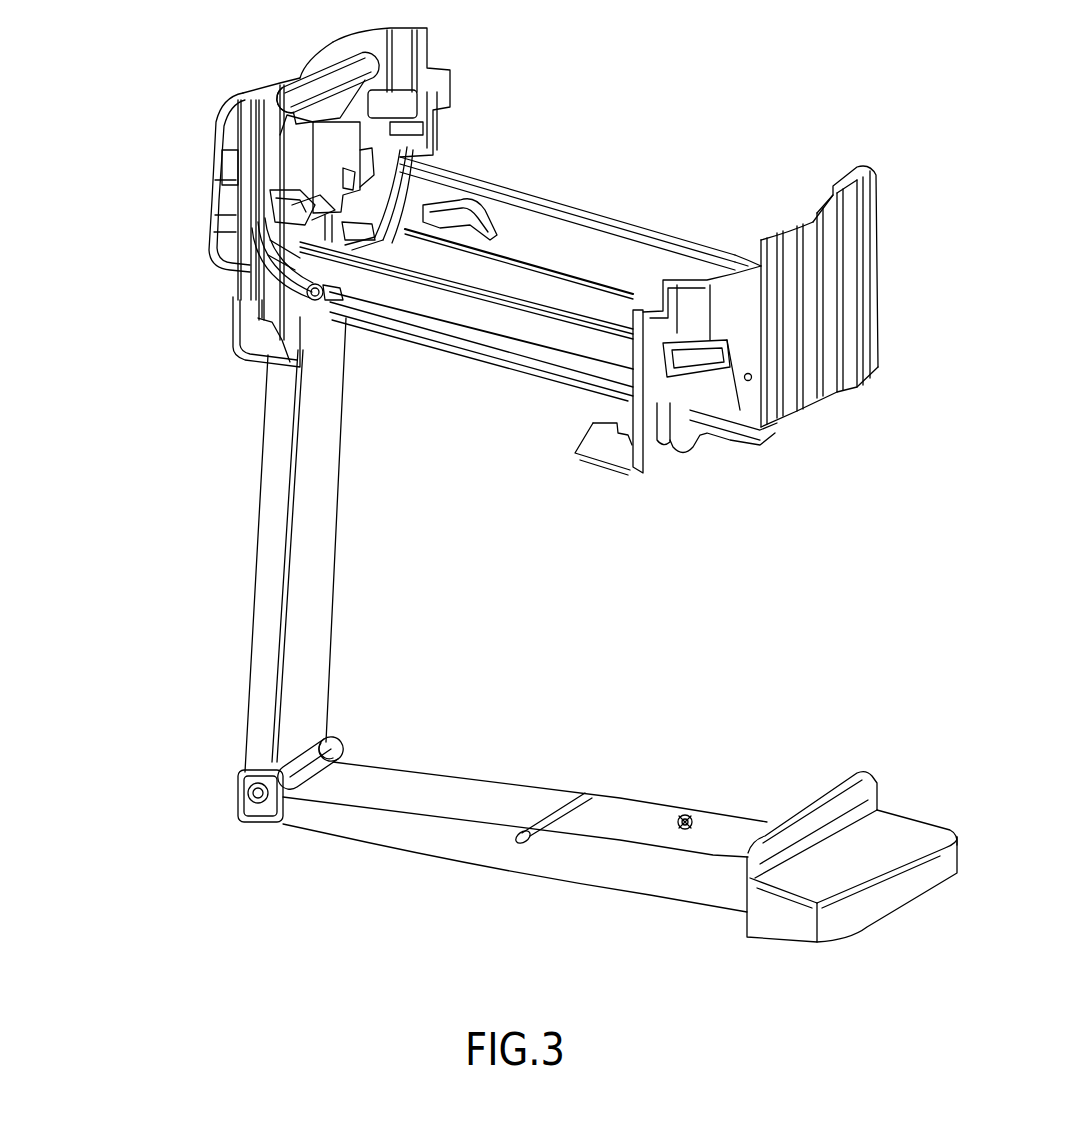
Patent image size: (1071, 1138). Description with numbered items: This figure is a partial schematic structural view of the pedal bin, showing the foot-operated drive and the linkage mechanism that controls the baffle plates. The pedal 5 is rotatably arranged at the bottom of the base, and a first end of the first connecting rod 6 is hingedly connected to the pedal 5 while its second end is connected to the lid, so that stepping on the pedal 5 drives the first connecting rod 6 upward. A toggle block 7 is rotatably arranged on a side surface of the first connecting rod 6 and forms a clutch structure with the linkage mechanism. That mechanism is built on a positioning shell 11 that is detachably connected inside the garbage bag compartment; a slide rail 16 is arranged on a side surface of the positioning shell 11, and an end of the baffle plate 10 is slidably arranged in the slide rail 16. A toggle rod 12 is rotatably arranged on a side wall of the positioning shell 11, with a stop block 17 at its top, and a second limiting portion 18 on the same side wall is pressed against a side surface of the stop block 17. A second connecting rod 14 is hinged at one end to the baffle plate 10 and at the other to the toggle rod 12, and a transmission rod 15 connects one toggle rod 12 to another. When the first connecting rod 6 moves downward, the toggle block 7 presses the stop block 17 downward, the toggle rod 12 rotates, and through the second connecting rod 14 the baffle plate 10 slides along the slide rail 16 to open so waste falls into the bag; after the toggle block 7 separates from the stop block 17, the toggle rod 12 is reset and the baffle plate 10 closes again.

The pedal 5 is at (483, 795).
The first connecting rod 6 is at (265, 583).
The toggle block 7 is at (347, 180).
The baffle plate 10 is at (460, 337).
The positioning shell 11 is at (222, 253).
The toggle rod 12 is at (267, 237).
The second connecting rod 14 is at (437, 180).
The transmission rod 15 is at (570, 208).
The slide rail 16 is at (270, 303).
The stop block 17 is at (293, 197).
The second limiting portion 18 is at (363, 136).